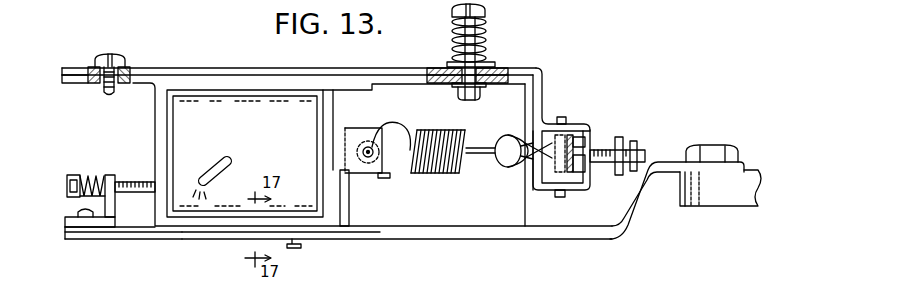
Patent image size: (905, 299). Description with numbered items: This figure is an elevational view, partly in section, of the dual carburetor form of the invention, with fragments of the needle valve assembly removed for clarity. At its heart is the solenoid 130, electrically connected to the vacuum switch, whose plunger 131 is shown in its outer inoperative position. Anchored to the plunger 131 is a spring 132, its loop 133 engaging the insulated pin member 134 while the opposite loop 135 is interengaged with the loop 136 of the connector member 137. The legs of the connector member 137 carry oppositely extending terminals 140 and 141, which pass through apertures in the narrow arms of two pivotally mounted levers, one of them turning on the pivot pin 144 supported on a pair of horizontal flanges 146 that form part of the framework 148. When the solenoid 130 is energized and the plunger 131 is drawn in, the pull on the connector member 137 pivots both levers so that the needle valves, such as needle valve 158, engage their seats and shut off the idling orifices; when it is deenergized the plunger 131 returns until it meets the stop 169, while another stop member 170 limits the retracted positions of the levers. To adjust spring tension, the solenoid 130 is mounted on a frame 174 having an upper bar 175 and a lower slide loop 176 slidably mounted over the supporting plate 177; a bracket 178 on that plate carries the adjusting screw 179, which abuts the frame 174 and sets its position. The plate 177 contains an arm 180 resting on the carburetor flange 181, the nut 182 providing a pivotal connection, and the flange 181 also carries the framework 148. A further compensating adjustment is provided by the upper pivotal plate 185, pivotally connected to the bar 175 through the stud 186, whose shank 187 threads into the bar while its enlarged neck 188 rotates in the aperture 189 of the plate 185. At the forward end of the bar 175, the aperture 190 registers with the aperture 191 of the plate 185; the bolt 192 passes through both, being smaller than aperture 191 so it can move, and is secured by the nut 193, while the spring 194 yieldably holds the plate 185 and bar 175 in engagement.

The solenoid 130 is at (248, 107).
The plunger 131 is at (357, 179).
The spring 132 is at (441, 172).
The loop 133 is at (382, 129).
The insulated pin member 134 is at (367, 146).
The opposite loop 135 is at (491, 155).
The loop 136 is at (512, 140).
The connector member 137 is at (516, 130).
The terminal 140 is at (585, 139).
The terminal 141 is at (587, 170).
The pivot pin 144 is at (563, 194).
The horizontal flanges 146 is at (570, 117).
The framework 148 is at (550, 67).
The needle valve 158 is at (640, 147).
The stop 169 is at (350, 200).
The stop member 170 is at (588, 122).
The frame 174 is at (153, 137).
The upper bar 175 is at (78, 84).
The lower slide loop 176 is at (210, 240).
The supporting plate 177 is at (149, 242).
The bracket 178 is at (87, 229).
The adjusting screw 179 is at (134, 182).
The arm 180 is at (672, 166).
The flange 181 is at (760, 190).
The nut 182 is at (736, 150).
The upper pivotal plate 185 is at (207, 68).
The stud 186 is at (118, 58).
The shank 187 is at (112, 84).
The enlarged neck 188 is at (104, 62).
The aperture 189 is at (124, 70).
The aperture 190 is at (465, 88).
The aperture 191 is at (445, 68).
The bolt 192 is at (455, 10).
The nut 193 is at (478, 88).
The spring 194 is at (482, 34).